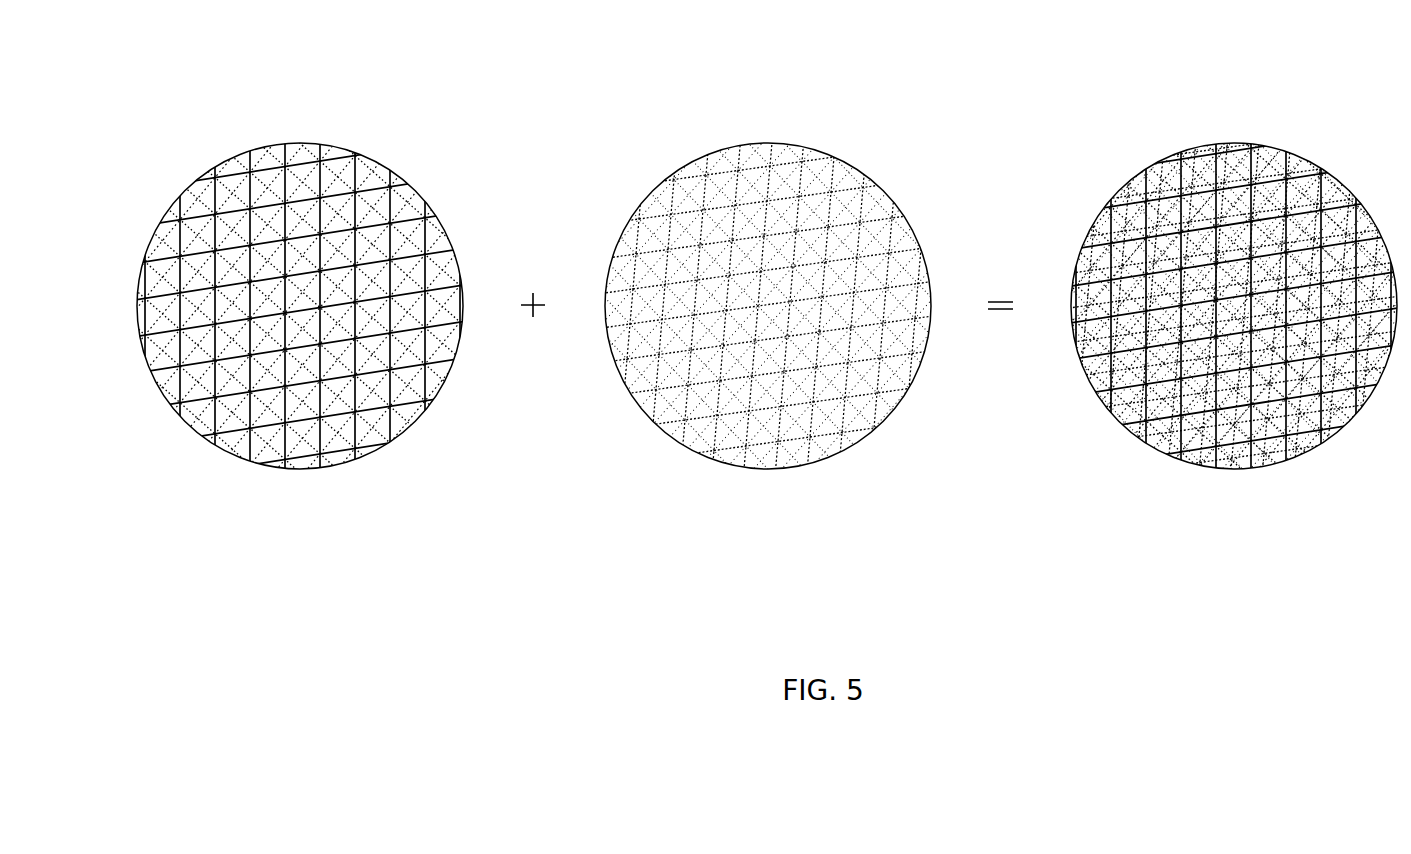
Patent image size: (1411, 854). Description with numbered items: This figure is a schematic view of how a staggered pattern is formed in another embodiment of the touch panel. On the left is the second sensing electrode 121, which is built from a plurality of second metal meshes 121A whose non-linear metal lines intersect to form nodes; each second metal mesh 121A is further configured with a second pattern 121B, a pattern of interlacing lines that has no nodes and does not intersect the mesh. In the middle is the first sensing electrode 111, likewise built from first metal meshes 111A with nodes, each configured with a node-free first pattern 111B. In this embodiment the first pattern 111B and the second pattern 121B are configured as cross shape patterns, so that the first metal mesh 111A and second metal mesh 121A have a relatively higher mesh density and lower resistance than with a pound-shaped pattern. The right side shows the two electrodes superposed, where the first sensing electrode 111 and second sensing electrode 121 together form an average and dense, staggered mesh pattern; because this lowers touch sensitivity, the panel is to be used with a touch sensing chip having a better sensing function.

The first sensing electrode 111 is at (901, 366).
The first metal mesh 111A is at (692, 197).
The first pattern 111B is at (638, 76).
The second sensing electrode 121 is at (705, 377).
The second metal mesh 121A is at (240, 200).
The second pattern 121B is at (167, 76).